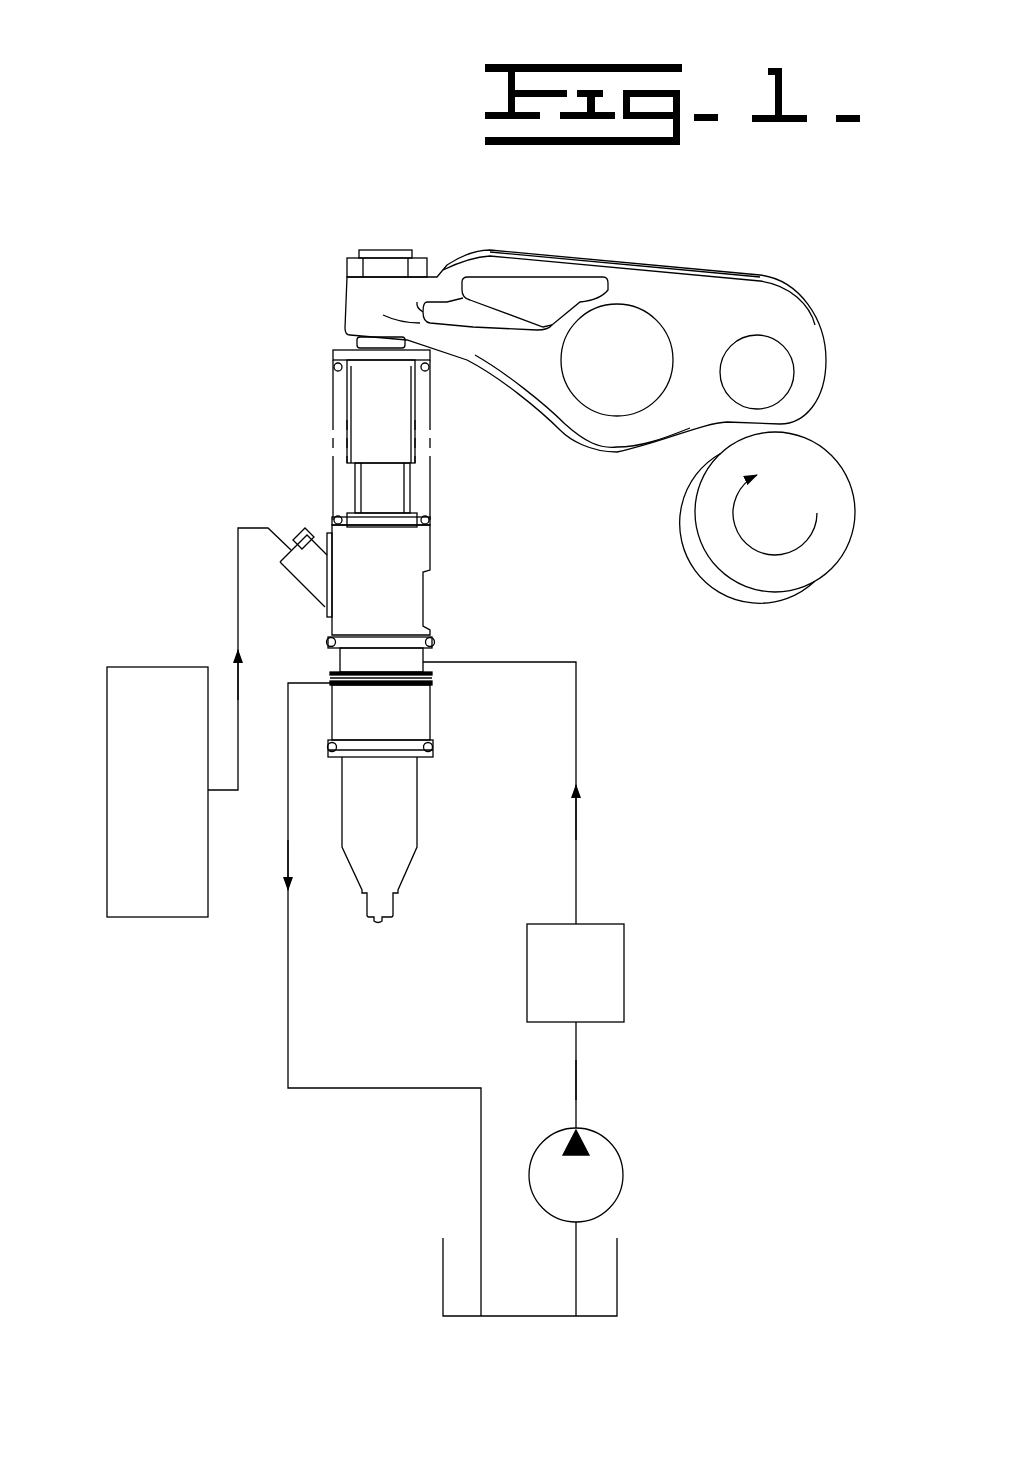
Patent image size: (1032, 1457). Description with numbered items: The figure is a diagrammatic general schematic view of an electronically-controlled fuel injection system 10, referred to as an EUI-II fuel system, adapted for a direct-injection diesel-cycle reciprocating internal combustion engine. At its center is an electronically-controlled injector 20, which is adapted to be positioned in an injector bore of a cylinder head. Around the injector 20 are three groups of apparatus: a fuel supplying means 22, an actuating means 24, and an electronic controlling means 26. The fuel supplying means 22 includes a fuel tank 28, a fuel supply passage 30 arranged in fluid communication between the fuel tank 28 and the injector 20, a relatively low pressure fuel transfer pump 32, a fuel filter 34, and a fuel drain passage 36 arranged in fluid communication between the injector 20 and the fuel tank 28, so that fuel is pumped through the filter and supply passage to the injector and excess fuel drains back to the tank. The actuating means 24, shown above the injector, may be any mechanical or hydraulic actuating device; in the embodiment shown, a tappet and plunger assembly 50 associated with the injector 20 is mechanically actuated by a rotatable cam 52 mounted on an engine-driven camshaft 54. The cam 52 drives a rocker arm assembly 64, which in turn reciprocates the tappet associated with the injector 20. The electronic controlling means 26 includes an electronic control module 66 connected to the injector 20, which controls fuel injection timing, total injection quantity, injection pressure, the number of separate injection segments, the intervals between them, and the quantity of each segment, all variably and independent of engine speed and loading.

The electronically-controlled fuel injection system 10 is at (238, 72).
The electronically-controlled injector 20 is at (392, 570).
The fuel supplying means 22 is at (673, 1058).
The actuating means 24 is at (805, 268).
The electronic controlling means 26 is at (118, 638).
The fuel tank 28 is at (617, 1275).
The fuel supply passage 30 is at (585, 728).
The fuel transfer pump 32 is at (623, 1173).
The fuel filter 34 is at (624, 967).
The fuel drain passage 36 is at (283, 1045).
The tappet and plunger assembly 50 is at (325, 352).
The cam 52 is at (757, 605).
The camshaft 54 is at (855, 527).
The rocker arm assembly 64 is at (610, 258).
The electronic control module 66 is at (170, 769).